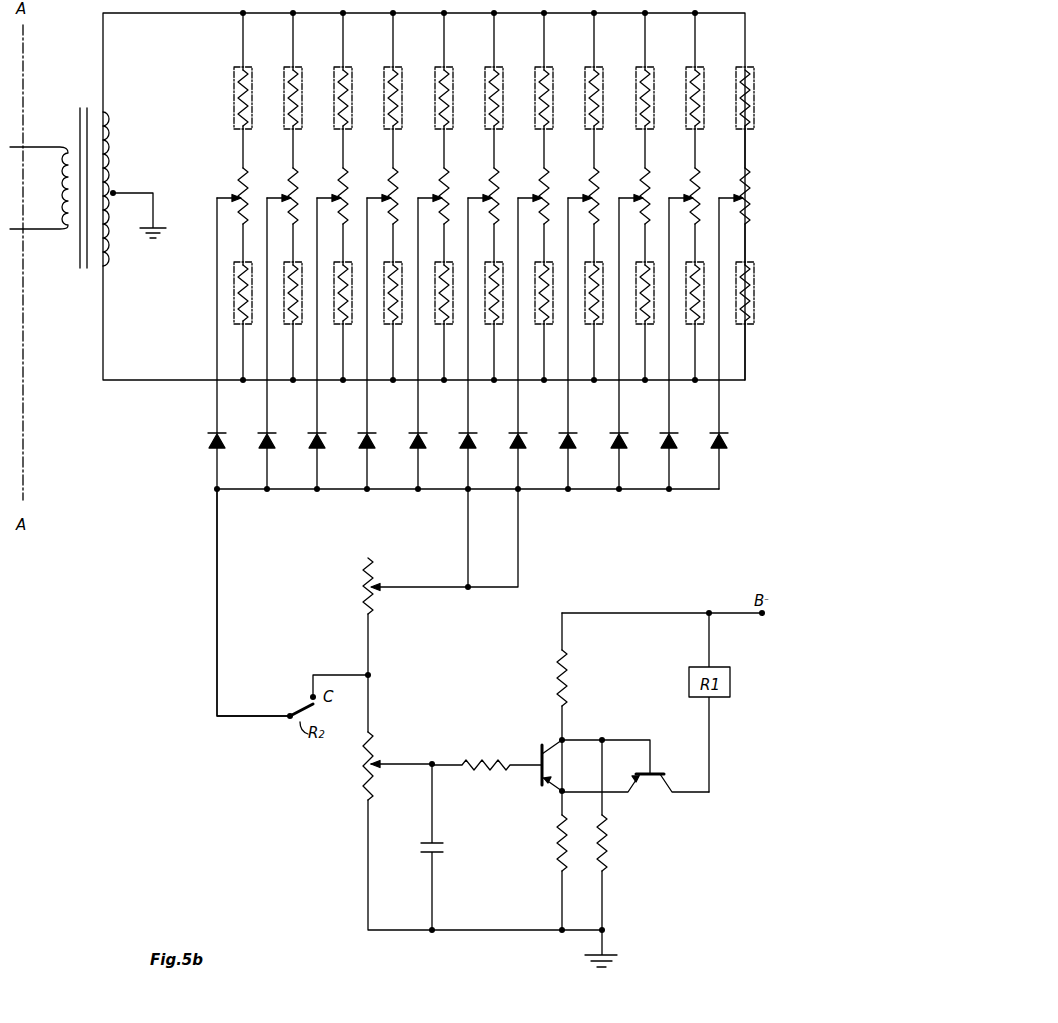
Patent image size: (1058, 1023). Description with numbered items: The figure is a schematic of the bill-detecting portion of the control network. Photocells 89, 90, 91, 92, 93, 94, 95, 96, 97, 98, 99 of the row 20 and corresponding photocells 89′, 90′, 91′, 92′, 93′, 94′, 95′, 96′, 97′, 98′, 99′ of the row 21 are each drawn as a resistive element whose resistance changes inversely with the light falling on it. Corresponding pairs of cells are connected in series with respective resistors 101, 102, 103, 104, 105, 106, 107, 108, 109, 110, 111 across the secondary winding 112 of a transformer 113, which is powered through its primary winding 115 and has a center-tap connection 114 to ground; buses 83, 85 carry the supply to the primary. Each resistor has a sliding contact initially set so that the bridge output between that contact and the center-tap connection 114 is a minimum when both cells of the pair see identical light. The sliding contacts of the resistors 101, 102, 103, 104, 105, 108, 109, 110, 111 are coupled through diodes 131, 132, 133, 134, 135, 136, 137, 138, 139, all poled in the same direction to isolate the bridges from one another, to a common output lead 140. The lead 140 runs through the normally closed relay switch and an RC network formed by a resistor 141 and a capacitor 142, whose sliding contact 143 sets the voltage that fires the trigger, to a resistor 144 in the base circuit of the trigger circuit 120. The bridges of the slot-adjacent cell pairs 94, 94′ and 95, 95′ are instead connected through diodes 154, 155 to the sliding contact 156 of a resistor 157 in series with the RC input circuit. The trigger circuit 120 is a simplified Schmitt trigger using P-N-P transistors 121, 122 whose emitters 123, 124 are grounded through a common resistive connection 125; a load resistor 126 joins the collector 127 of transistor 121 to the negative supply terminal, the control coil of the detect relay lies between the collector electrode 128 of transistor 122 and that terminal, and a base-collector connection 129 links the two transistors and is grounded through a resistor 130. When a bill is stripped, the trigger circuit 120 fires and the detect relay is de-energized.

The row of photocells 20 is at (229, 97).
The row of photocells 21 is at (212, 300).
The bus 83 is at (35, 229).
The bus 85 is at (30, 147).
The secondary winding 112 is at (112, 148).
The transformer 113 is at (86, 98).
The center-tap connection 114 is at (135, 193).
The primary winding 115 is at (39, 188).
The photocell 89 is at (234, 84).
The photocell 90 is at (289, 82).
The photocell 91 is at (339, 80).
The photocell 92 is at (392, 82).
The photocell 93 is at (438, 82).
The photocell 94 is at (483, 88).
The photocell 95 is at (536, 86).
The photocell 96 is at (586, 86).
The photocell 97 is at (636, 84).
The photocell 98 is at (686, 84).
The photocell 99 is at (738, 84).
The photocell 89′ is at (239, 318).
The photocell 90′ is at (292, 318).
The photocell 91′ is at (340, 318).
The photocell 92′ is at (390, 318).
The photocell 93′ is at (441, 318).
The photocell 94′ is at (491, 318).
The photocell 95′ is at (541, 318).
The photocell 96′ is at (591, 318).
The photocell 97′ is at (642, 318).
The photocell 98′ is at (692, 318).
The photocell 99′ is at (742, 318).
The resistor 101 is at (236, 180).
The resistor 102 is at (286, 180).
The resistor 103 is at (336, 180).
The resistor 104 is at (386, 180).
The resistor 105 is at (437, 180).
The resistor 106 is at (487, 180).
The resistor 107 is at (537, 180).
The resistor 108 is at (587, 180).
The resistor 109 is at (638, 180).
The resistor 110 is at (688, 180).
The resistor 111 is at (738, 180).
The diode 131 is at (208, 440).
The diode 132 is at (259, 437).
The diode 133 is at (309, 437).
The diode 134 is at (359, 437).
The diode 135 is at (410, 437).
The diode 154 is at (460, 437).
The diode 155 is at (510, 437).
The diode 136 is at (560, 437).
The diode 137 is at (611, 437).
The diode 138 is at (661, 437).
The diode 139 is at (711, 437).
The common output lead 140 is at (210, 560).
The resistor 141 is at (362, 790).
The capacitor 142 is at (422, 842).
The sliding contact 143 is at (376, 756).
The resistor 144 is at (477, 758).
The sliding contact 156 is at (383, 585).
The resistor 157 is at (366, 594).
The trigger circuit 120 is at (664, 840).
The transistor 121 is at (535, 750).
The transistor 122 is at (654, 772).
The emitter 123 is at (547, 787).
The emitter 124 is at (632, 792).
The common resistive connection 125 is at (556, 844).
The load resistor 126 is at (554, 672).
The collector 127 is at (545, 742).
The collector electrode 128 is at (659, 784).
The base-collector connection 129 is at (648, 722).
The resistor 130 is at (608, 864).